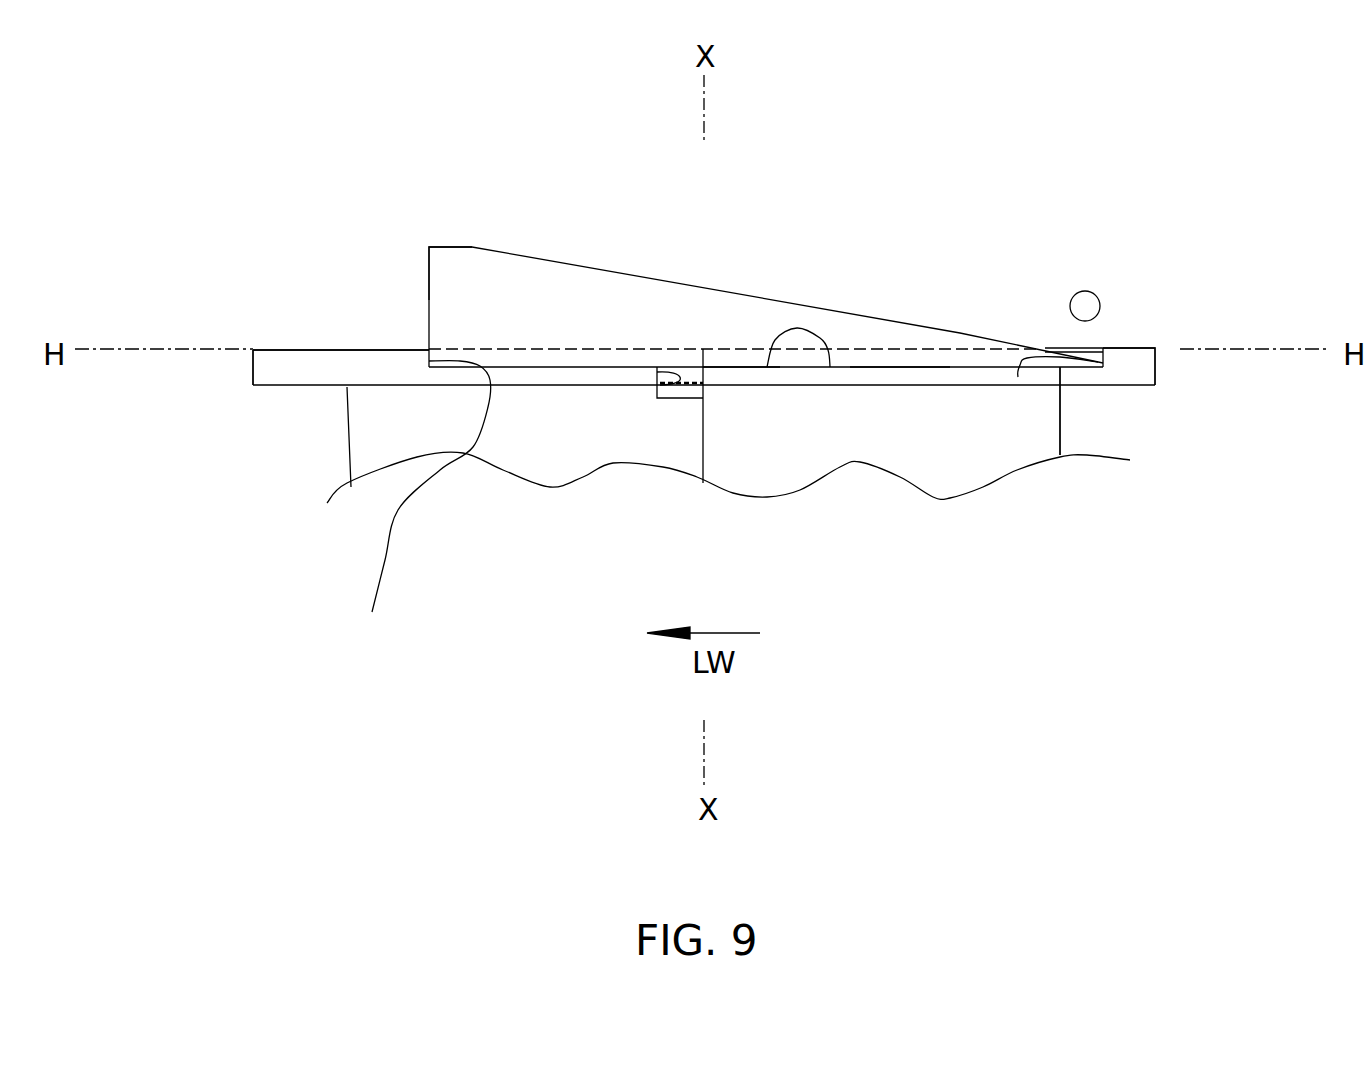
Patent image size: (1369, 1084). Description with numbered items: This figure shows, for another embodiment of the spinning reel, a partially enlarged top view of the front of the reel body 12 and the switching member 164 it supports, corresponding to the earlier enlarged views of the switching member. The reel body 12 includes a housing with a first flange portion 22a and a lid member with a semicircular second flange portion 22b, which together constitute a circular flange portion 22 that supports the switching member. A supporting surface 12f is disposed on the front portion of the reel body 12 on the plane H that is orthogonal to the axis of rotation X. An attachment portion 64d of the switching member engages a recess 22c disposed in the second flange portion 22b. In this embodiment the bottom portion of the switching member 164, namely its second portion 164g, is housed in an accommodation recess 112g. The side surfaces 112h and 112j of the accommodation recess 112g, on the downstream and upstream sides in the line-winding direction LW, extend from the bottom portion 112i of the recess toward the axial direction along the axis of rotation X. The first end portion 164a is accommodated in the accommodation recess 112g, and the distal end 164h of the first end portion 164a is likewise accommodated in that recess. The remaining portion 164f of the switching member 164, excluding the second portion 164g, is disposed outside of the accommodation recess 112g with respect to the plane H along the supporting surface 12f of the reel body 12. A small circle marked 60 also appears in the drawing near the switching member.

The reel body 12 is at (530, 498).
The supporting surface 12f is at (341, 350).
The flange portion 22 is at (383, 404).
The first flange portion 22a is at (1140, 370).
The second flange portion 22b is at (275, 368).
The recess 22c is at (682, 383).
The pivot shaft 60 is at (1087, 305).
The attachment portion 64d is at (687, 390).
The accommodation recess 112g is at (743, 348).
The side surface 112h is at (413, 507).
The bottom portion 112i is at (830, 367).
The side surface 112j is at (1018, 377).
The switching member 164 is at (713, 262).
The first end portion 164a is at (1057, 330).
The portion of the first end portion 164f is at (628, 313).
The second portion 164g is at (895, 357).
The distal end 164h is at (1097, 363).